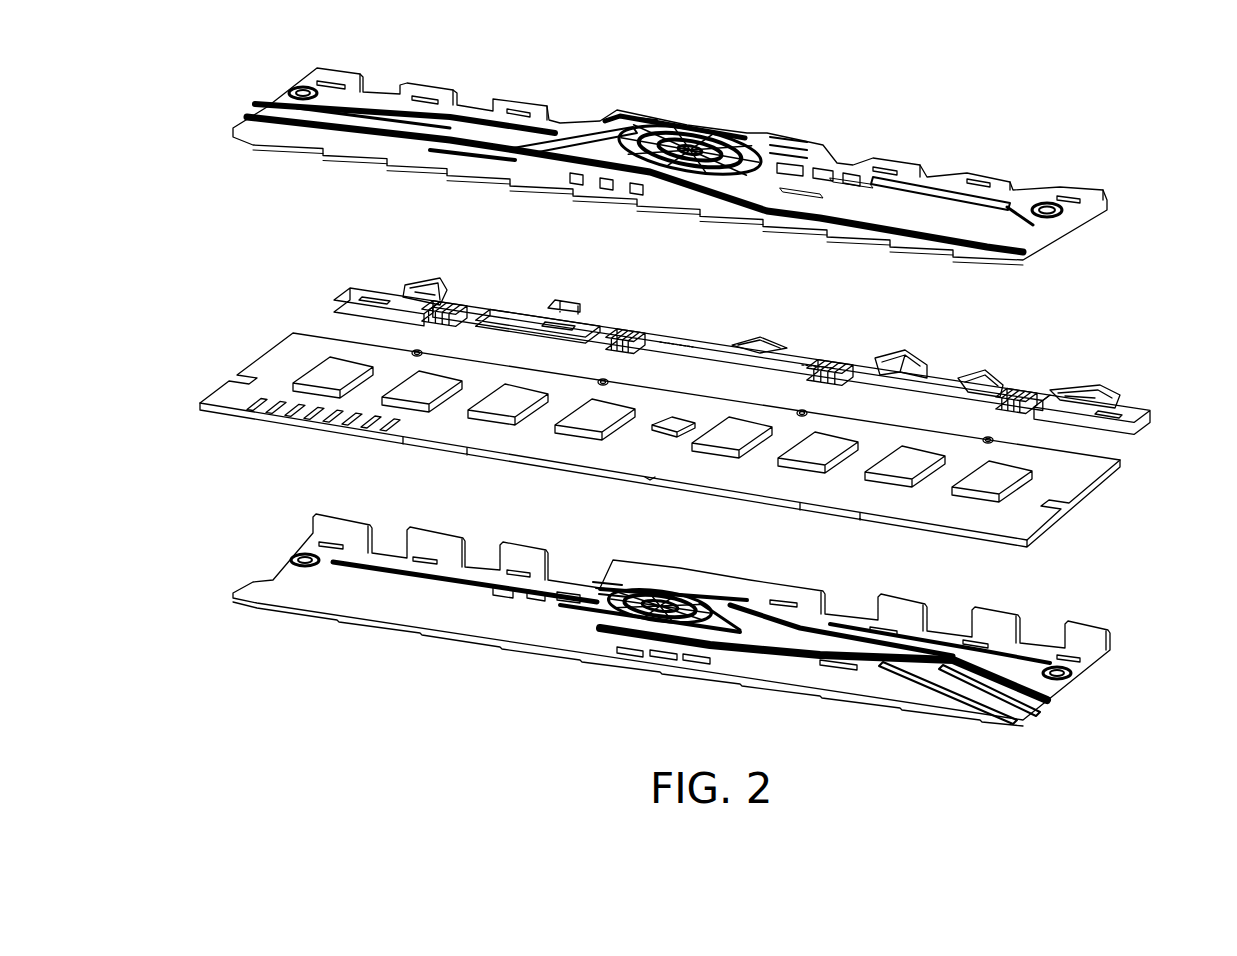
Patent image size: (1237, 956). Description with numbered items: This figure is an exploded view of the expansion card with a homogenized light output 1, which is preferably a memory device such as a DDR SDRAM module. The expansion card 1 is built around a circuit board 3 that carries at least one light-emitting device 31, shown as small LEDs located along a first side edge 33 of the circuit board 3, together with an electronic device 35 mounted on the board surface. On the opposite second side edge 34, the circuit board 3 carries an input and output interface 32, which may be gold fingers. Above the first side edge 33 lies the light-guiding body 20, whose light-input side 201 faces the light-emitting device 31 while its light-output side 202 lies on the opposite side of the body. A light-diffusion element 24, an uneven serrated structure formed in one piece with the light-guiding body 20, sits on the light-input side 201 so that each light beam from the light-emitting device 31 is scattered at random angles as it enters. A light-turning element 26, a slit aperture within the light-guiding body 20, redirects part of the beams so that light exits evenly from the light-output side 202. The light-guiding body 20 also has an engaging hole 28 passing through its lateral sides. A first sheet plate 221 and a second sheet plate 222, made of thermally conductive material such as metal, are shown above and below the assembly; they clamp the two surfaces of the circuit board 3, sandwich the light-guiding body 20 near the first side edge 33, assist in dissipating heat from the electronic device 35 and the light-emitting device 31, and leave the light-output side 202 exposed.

The expansion card with a homogenized light output 1 is at (1214, 102).
The first sheet plate 221 is at (1100, 178).
The second sheet plate 222 is at (1097, 657).
The circuit board 3 is at (684, 393).
The light-emitting device 31 is at (604, 378).
The input and output interface 32 is at (265, 413).
The first side edge 33 is at (512, 367).
The second side edge 34 is at (513, 468).
The electronic device 35 is at (330, 367).
The light-guiding body 20 is at (742, 345).
The light-input side 201 is at (708, 363).
The light-output side 202 is at (763, 340).
The light-diffusion element 24 is at (652, 350).
The light-turning element 26 is at (823, 363).
The engaging hole 28 is at (970, 393).